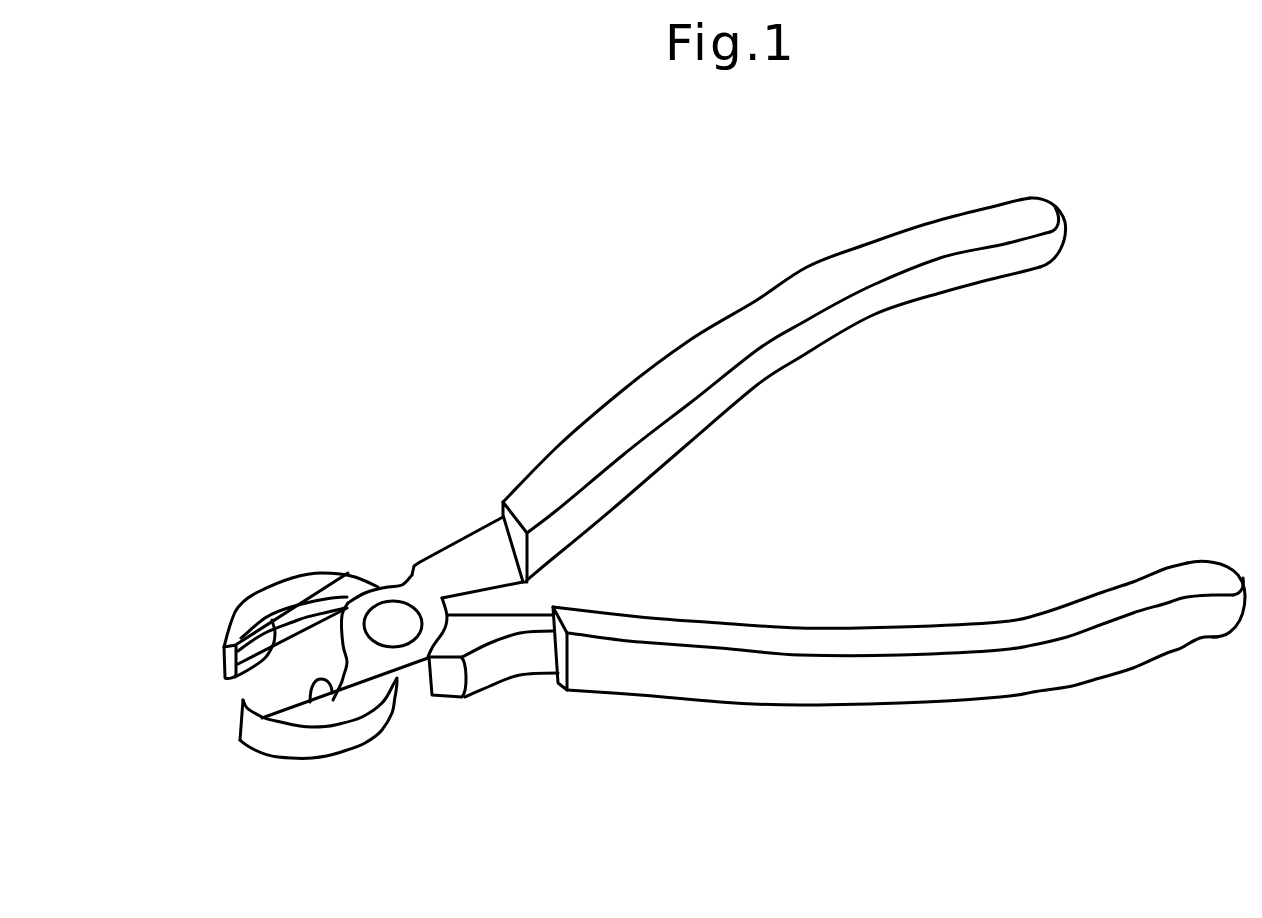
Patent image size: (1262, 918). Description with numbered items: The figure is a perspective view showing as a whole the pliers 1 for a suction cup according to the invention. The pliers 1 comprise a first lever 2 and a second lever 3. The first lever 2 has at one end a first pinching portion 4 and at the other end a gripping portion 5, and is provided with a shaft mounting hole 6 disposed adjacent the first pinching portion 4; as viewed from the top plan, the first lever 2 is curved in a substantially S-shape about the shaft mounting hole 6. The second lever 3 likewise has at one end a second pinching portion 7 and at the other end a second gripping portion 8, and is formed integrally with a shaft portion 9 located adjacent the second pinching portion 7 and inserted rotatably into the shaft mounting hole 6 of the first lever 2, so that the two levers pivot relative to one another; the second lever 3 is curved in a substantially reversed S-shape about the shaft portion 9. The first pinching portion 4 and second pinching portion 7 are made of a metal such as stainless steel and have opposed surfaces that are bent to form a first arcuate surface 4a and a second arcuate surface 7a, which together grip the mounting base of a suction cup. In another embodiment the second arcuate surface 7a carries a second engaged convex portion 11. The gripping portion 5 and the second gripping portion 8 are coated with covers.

The pliers 1 is at (1103, 265).
The first lever 2 is at (700, 320).
The second lever 3 is at (747, 706).
The first pinching portion 4 is at (288, 743).
The first arcuate surface 4a is at (334, 697).
The gripping portion 5 is at (820, 330).
The shaft mounting hole 6 is at (391, 608).
The second pinching portion 7 is at (298, 578).
The second arcuate surface 7a is at (277, 620).
The second gripping portion 8 is at (878, 688).
The shaft portion 9 is at (392, 628).
The second engaged convex portion 11 is at (250, 678).